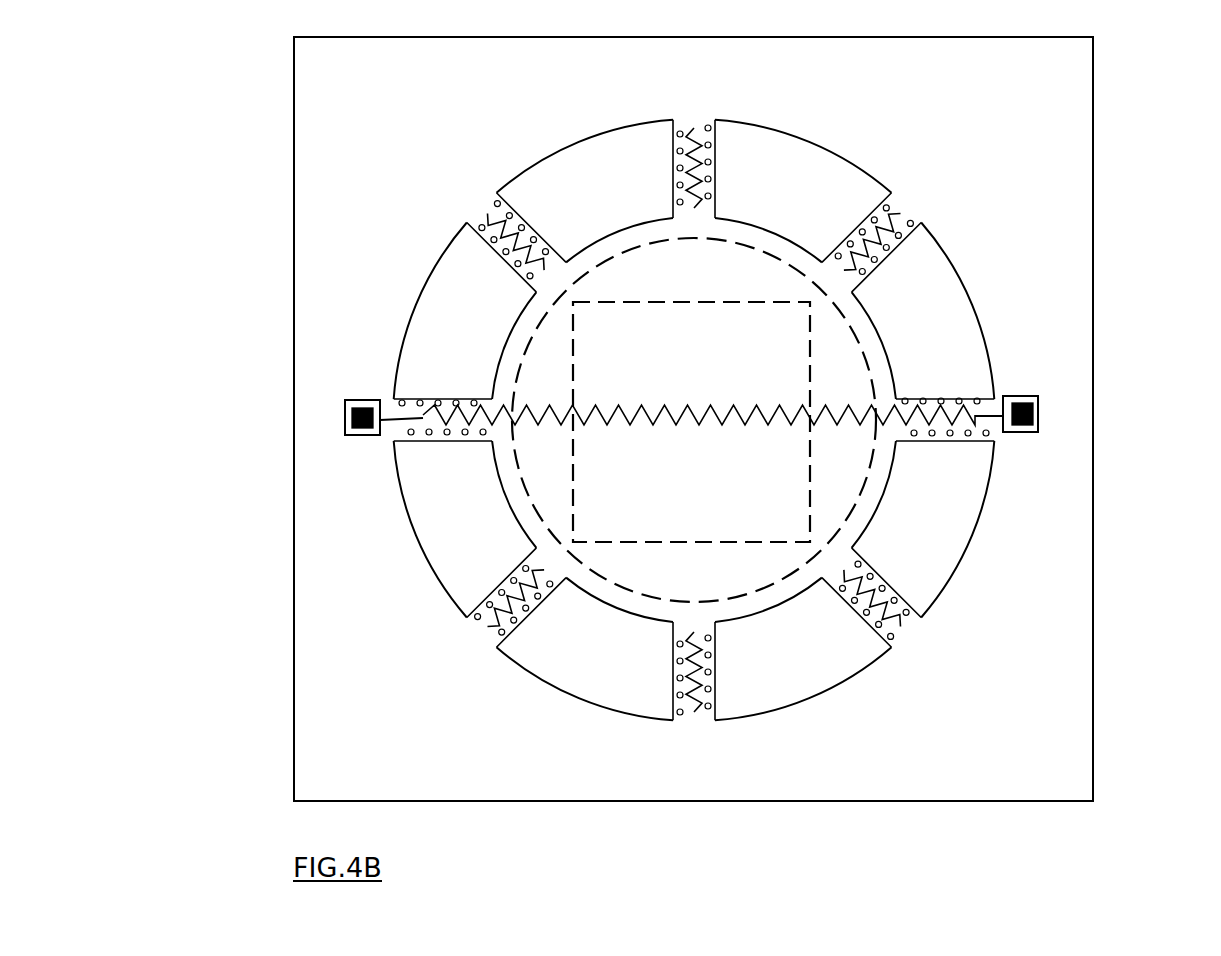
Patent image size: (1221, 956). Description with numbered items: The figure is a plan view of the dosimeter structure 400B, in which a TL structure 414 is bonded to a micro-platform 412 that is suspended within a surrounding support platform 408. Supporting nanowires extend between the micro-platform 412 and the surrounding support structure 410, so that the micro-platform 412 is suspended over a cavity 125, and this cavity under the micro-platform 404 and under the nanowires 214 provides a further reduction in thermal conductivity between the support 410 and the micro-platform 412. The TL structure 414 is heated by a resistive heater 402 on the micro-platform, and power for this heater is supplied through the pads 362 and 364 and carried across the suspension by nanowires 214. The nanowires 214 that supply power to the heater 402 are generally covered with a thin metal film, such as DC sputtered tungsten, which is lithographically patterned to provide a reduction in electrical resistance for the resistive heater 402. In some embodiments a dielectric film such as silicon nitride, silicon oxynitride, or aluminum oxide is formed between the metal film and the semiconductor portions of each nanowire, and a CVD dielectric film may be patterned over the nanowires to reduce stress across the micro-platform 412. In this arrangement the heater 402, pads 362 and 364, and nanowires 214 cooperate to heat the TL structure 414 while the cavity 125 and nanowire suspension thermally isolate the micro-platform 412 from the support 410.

The magnetic field sensor layout 400B is at (210, 32).
The surrounding support platform 408 is at (360, 172).
The cavity 125 is at (617, 199).
The surrounding support structure 410 is at (440, 257).
The micro-platform 412 is at (497, 358).
The TL structure 414 is at (738, 240).
The micro-platform 404 is at (810, 370).
The resistive heater 402 is at (690, 408).
The pad 362 is at (345, 410).
The heater nanowire 364 is at (1040, 402).
The nanowires 214 is at (893, 583).